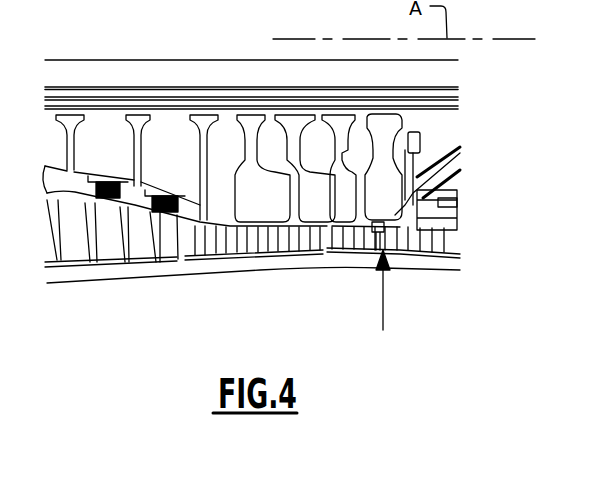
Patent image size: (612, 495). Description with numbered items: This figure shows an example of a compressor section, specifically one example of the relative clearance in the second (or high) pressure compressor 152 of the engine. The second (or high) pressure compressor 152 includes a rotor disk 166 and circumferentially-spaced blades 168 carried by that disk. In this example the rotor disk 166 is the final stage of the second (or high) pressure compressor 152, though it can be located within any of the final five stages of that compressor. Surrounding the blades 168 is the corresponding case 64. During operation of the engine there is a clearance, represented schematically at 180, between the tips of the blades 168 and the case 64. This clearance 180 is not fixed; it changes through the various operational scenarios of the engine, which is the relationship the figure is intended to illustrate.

The second (or high) pressure compressor 152 is at (440, 83).
The rotor disk 166 is at (397, 155).
The case 64 is at (260, 264).
The blades 168 is at (381, 238).
The clearance 180 is at (384, 294).